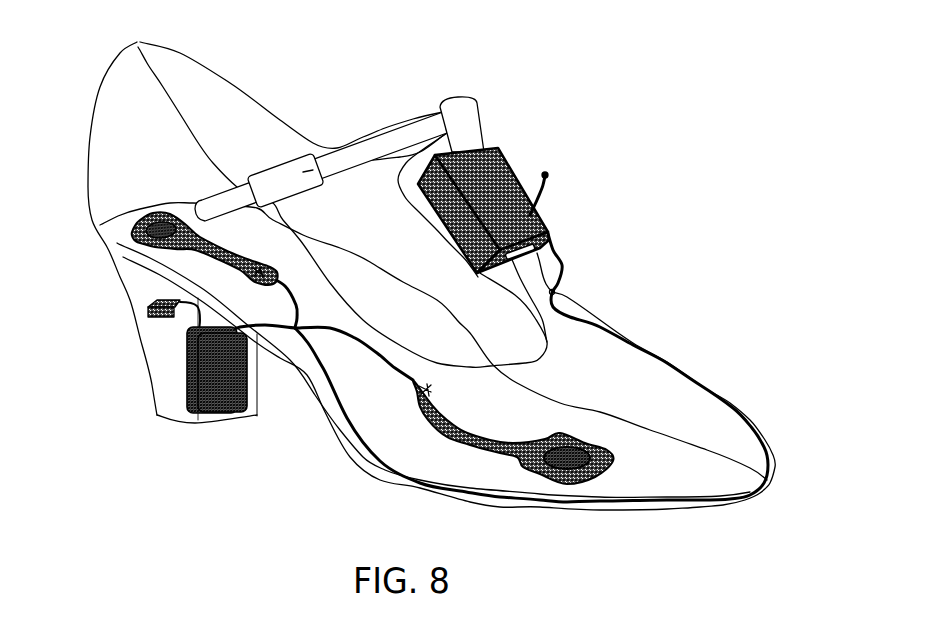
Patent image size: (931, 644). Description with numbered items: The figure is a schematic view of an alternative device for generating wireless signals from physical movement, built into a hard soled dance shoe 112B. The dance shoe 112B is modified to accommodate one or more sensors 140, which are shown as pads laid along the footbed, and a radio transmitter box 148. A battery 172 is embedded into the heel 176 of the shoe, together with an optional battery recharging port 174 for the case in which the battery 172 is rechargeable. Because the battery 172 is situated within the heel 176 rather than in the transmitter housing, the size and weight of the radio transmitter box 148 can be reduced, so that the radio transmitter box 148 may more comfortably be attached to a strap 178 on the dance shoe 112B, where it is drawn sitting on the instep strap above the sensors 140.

The hard soled dance shoe 112B is at (260, 107).
The sensor 140 is at (130, 233).
The radio transmitter box 148 is at (502, 173).
The battery 172 is at (228, 407).
The battery recharging port 174 is at (150, 322).
The heel 176 is at (170, 417).
The strap 178 is at (470, 143).